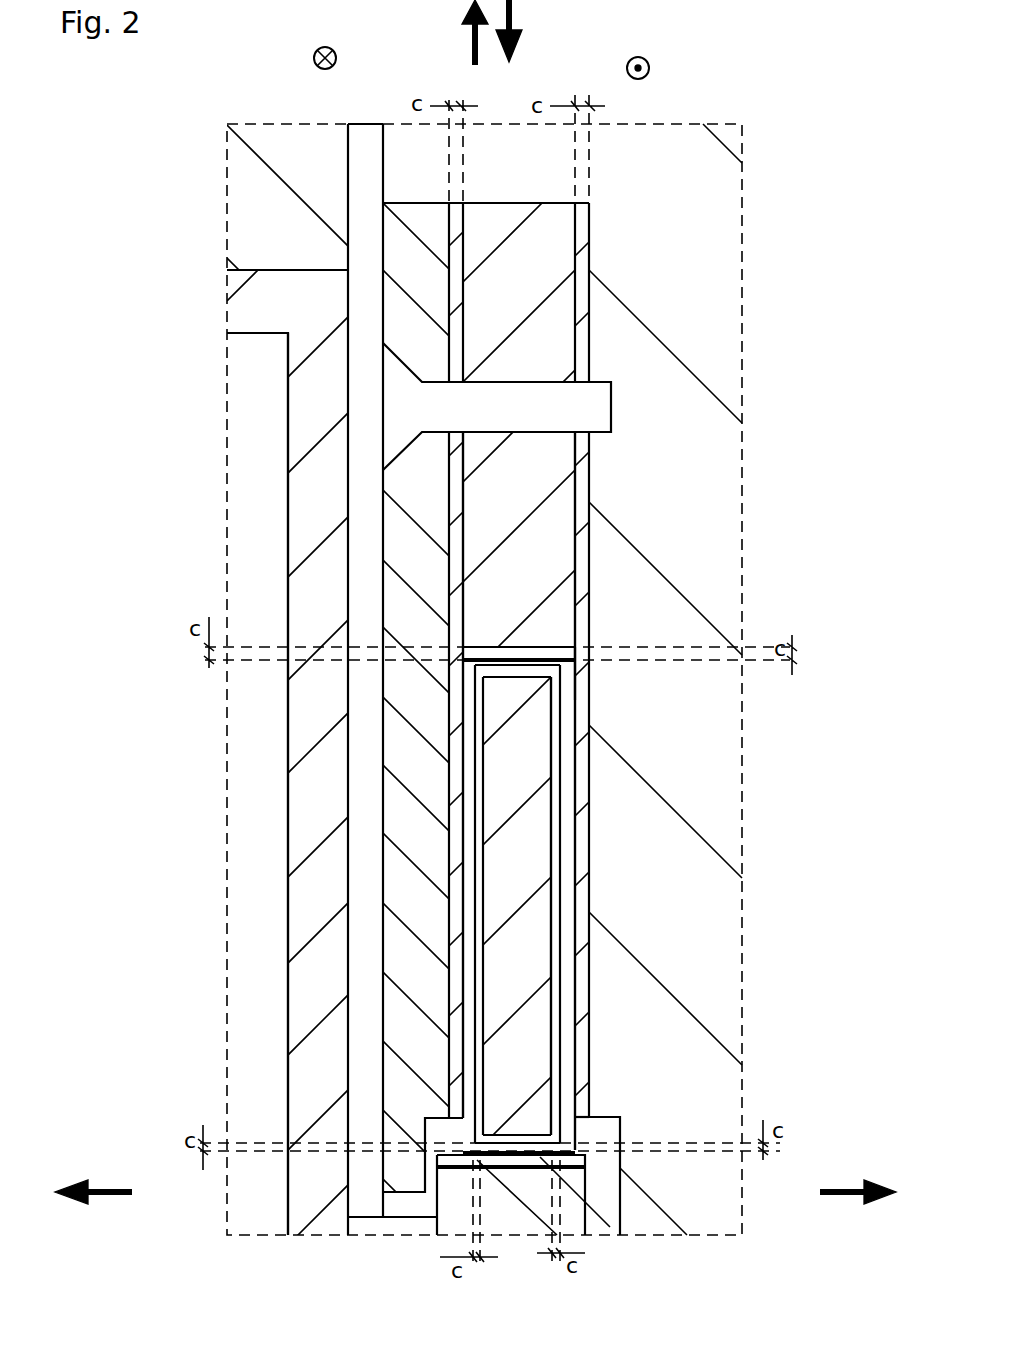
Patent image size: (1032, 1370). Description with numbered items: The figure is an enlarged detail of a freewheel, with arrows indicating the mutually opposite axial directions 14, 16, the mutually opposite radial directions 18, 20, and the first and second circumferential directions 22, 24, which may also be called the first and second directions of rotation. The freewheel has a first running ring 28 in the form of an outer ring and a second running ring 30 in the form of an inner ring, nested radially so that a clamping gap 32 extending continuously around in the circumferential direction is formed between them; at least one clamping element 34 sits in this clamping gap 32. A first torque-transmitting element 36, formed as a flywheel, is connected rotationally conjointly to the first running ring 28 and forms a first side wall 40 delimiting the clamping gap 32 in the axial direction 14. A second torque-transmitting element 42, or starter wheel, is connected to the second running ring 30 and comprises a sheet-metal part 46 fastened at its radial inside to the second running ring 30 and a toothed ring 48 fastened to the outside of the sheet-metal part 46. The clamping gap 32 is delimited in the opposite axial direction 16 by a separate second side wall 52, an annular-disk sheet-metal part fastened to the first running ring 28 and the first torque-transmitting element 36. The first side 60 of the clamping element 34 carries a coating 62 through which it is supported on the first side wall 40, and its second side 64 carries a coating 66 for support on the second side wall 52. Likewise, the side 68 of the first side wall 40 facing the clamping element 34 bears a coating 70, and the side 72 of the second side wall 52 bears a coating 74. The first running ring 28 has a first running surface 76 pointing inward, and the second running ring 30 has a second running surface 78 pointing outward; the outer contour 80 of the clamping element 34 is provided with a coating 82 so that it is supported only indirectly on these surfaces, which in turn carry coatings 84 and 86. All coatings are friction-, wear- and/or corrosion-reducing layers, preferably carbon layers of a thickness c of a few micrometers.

The axial direction 14 is at (850, 1205).
The axial direction 16 is at (100, 1193).
The radial direction 18 is at (470, 50).
The radial direction 20 is at (510, 4).
The first circumferential direction 22 is at (312, 57).
The second circumferential direction 24 is at (650, 57).
The first running ring 28 is at (530, 250).
The second running ring 30 is at (540, 1157).
The clamping gap 32 is at (565, 830).
The clamping element 34 is at (515, 903).
The first torque-transmitting element 36 is at (725, 462).
The first side wall 40 is at (610, 975).
The second torque-transmitting element 42 is at (275, 550).
The sheet-metal part 46 is at (310, 512).
The toothed ring 48 is at (245, 190).
The second side wall 52 is at (432, 985).
The first side 60 is at (562, 880).
The coating 62 is at (556, 893).
The second side 64 is at (478, 855).
The coating 66 is at (477, 868).
The side 68 is at (585, 690).
The coating 70 is at (580, 772).
The side 72 is at (455, 718).
The coating 74 is at (455, 742).
The first running surface 76 is at (545, 648).
The second running surface 78 is at (442, 1165).
The outer contour 80 is at (577, 662).
The coating 82 is at (450, 683).
The coating 84 is at (470, 647).
The coating 86 is at (518, 1160).